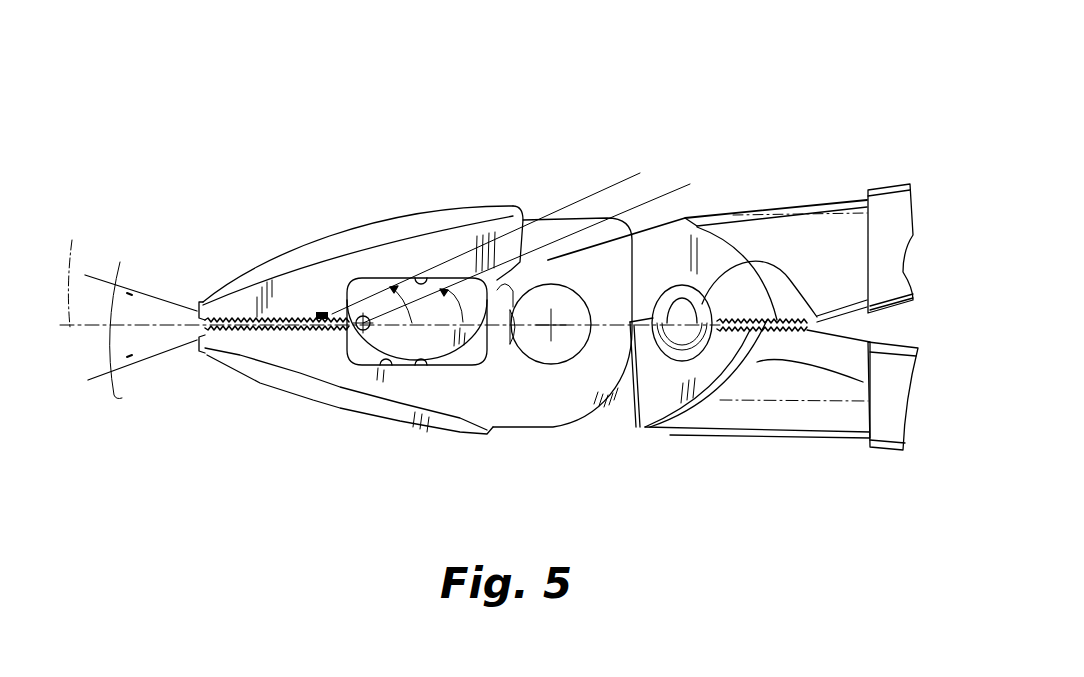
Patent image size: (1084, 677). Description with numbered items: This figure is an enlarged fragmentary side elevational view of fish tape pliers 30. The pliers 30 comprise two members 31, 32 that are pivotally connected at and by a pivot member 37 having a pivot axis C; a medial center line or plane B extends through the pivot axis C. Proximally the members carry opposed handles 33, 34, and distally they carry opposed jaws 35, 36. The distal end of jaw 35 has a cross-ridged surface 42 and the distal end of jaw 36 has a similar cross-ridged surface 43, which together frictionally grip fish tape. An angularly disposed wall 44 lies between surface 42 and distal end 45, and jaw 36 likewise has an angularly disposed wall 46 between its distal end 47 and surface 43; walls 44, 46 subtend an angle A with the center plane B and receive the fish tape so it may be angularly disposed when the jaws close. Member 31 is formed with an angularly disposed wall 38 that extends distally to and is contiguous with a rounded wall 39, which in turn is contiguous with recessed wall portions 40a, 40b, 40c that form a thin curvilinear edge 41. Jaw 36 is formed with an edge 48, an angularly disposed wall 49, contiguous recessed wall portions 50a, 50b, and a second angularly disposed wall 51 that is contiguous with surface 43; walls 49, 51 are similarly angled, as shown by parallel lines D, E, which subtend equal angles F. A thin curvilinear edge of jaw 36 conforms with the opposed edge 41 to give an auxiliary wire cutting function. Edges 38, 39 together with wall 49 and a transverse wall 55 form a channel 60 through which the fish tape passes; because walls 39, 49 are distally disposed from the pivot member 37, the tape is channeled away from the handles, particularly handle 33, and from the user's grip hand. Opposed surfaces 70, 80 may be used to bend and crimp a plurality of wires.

The fish tape pliers 30 is at (690, 68).
The member 31 is at (813, 197).
The member 32 is at (800, 447).
The handle 33 is at (895, 192).
The handle 34 is at (895, 417).
The jaw 35 is at (233, 350).
The jaw 36 is at (362, 316).
The pivot member 37 is at (574, 338).
The angularly disposed edge or wall 38 is at (653, 222).
The rounded edge or wall 39 is at (511, 320).
The recessed wall portion 40a is at (487, 430).
The recessed wall portion 40b is at (415, 362).
The recessed wall portion 40c is at (350, 356).
The thin curvilinear edge 41 is at (390, 366).
The cross-ridged surface 42 is at (257, 350).
The cross-ridged surface 43 is at (238, 320).
The angularly disposed wall or edge 44 is at (207, 352).
The distal end 45 is at (200, 347).
The angularly disposed wall 46 is at (212, 318).
The distal end 47 is at (200, 307).
The edge or wall 48 is at (507, 268).
The angularly disposed edge or wall 49 is at (473, 280).
The recessed wall portion 50a is at (424, 280).
The recessed wall portion 50b is at (352, 310).
The second angularly disposed wall or edge 51 is at (313, 318).
The transverse wall 55 is at (577, 218).
The channel 60 is at (622, 216).
The opposed surface 70 is at (742, 270).
The opposed surface 80 is at (745, 340).
The angle A is at (138, 332).
The medial center line or plane B is at (76, 262).
The pivot axis C is at (556, 333).
The line or plane D is at (572, 200).
The line or plane E is at (688, 180).
The angle F is at (406, 286).